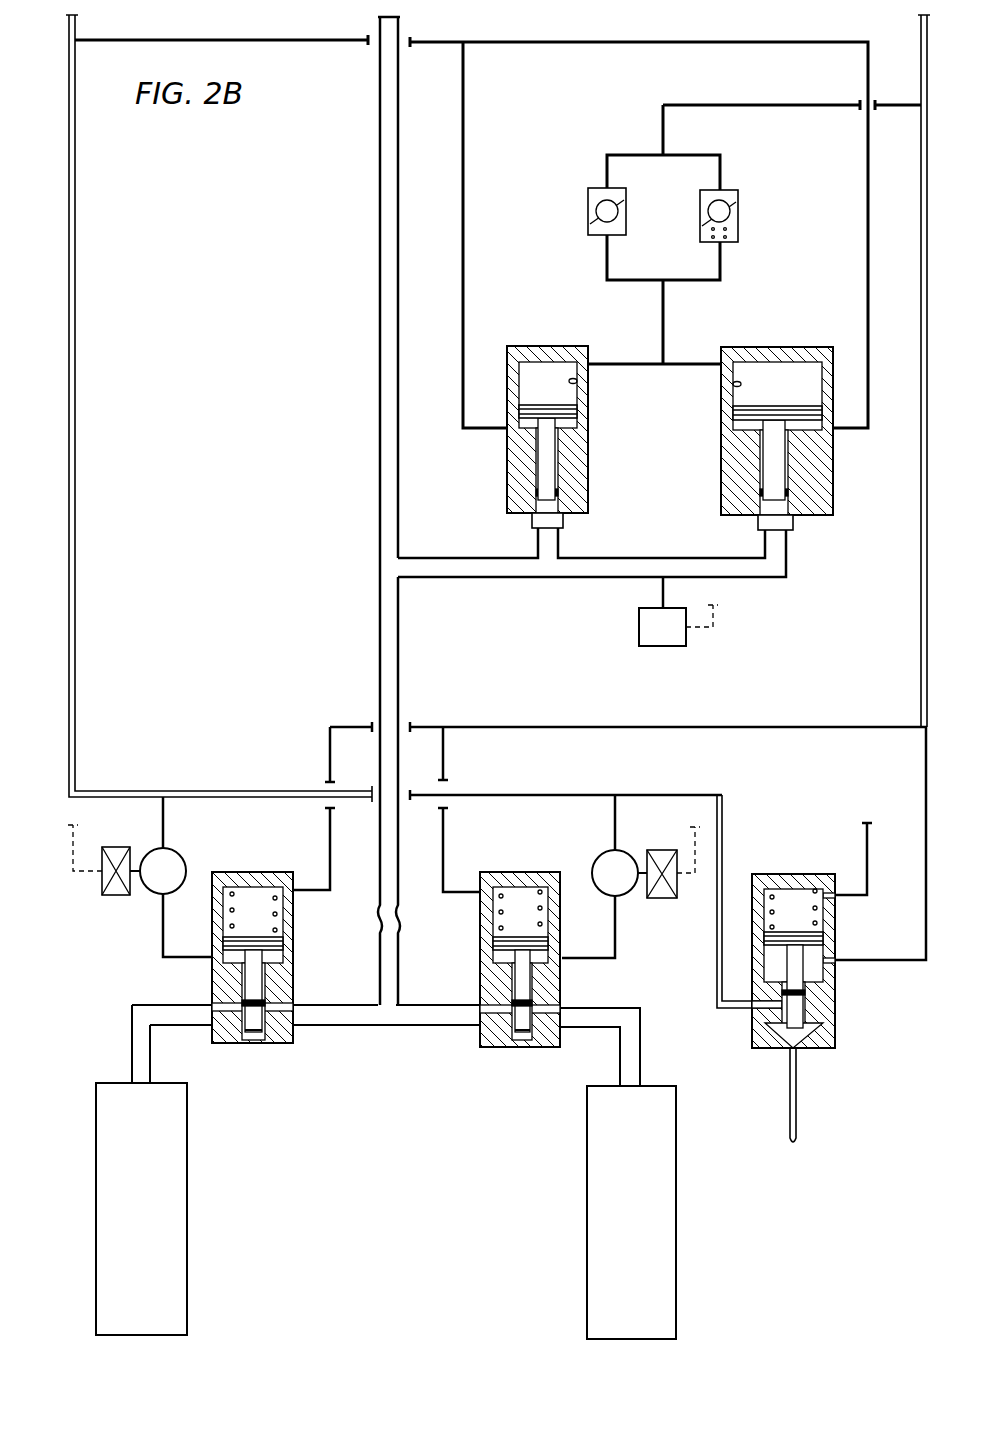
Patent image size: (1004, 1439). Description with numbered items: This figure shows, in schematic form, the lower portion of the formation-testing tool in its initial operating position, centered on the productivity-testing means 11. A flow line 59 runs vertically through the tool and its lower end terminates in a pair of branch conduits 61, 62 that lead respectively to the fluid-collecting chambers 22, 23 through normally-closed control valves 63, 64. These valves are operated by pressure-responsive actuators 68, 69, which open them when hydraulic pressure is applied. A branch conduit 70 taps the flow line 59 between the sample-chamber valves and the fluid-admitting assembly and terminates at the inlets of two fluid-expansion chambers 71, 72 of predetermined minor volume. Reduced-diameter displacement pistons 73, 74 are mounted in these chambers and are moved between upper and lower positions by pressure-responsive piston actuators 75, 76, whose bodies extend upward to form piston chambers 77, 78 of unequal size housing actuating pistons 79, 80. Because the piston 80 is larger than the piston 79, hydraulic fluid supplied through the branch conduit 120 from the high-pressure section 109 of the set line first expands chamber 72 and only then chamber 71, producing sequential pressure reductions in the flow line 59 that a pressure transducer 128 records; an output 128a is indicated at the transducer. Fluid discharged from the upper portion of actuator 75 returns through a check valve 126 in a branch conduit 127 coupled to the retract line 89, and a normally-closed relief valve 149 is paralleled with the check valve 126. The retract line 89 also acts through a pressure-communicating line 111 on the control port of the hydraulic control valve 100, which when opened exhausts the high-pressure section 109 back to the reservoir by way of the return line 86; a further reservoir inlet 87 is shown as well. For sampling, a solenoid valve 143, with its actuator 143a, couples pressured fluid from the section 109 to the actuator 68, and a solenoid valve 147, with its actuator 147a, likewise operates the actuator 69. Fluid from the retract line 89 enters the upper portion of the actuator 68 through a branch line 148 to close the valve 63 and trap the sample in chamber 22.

The productivity-testing means 11 is at (698, 259).
The fluid-collecting chamber 22 is at (187, 1222).
The fluid-collecting chamber 23 is at (587, 1237).
The flow line 59 is at (380, 171).
The branch conduit 61 is at (339, 1027).
The branch conduit 62 is at (448, 1027).
The control valve 63 is at (256, 1052).
The control valve 64 is at (513, 1052).
The pressure-responsive actuator 68 is at (252, 961).
The pressure-responsive actuator 69 is at (520, 961).
The branch conduit 70 is at (466, 578).
The fluid-expansion chamber 71 is at (558, 505).
The fluid-expansion chamber 72 is at (785, 510).
The displacement piston 73 is at (548, 465).
The displacement piston 74 is at (778, 465).
The pressure-responsive piston actuator 75 is at (573, 414).
The pressure-responsive piston actuator 76 is at (784, 420).
The piston chamber 77 is at (577, 380).
The piston chamber 78 is at (733, 383).
The actuating piston 79 is at (577, 418).
The actuating piston 80 is at (740, 424).
The reservoir return line 86 is at (797, 1130).
The reservoir inlet 87 is at (867, 853).
The retract line 89 is at (921, 56).
The hydraulic control valve 100 is at (840, 1031).
The high-pressure section 109 is at (75, 284).
The pressure-communicating line 111 is at (885, 962).
The branch conduit 120 is at (465, 150).
The check valve 126 is at (626, 215).
The branch conduit 127 is at (790, 106).
The pressure transducer 128 is at (639, 628).
The sensor output 128a is at (713, 617).
The solenoid valve 143 is at (180, 855).
The valve actuator 143a is at (78, 830).
The solenoid valve 147 is at (622, 895).
The valve actuator 147a is at (692, 830).
The branch line 148 is at (740, 727).
The relief valve 149 is at (738, 215).